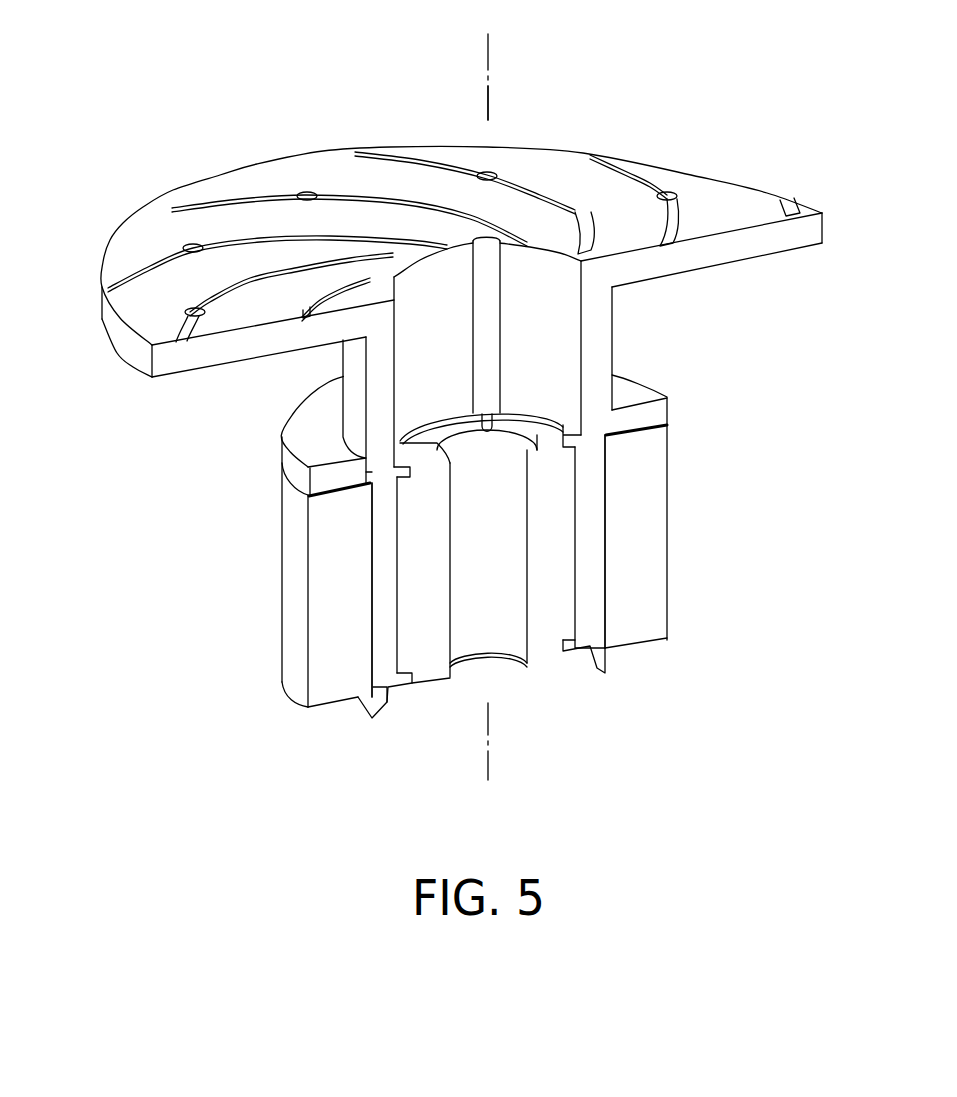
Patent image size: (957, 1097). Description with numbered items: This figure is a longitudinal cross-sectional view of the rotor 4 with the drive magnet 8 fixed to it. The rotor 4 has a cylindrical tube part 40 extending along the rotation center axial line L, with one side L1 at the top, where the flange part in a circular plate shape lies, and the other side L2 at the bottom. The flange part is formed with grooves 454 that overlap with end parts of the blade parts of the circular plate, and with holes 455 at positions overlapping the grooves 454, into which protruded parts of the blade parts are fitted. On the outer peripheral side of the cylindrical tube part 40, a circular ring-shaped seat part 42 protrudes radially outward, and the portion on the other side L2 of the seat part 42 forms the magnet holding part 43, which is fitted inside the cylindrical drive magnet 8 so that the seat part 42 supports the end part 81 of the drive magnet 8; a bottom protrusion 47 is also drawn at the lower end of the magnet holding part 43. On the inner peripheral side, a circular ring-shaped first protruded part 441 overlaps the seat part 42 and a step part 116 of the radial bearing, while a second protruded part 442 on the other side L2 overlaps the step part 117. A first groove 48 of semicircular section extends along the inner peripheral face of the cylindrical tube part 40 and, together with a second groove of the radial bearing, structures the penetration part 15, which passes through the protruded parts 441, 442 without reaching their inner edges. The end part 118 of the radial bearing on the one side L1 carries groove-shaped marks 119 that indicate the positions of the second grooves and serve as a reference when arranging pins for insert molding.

The rotor 4 is at (256, 171).
The grooves 454 is at (678, 232).
The holes 455 is at (675, 192).
The first groove 48 is at (500, 331).
The penetration part 15 is at (486, 325).
The end part 118 is at (517, 427).
The first protruded part 441 is at (400, 438).
The marks 119 is at (420, 445).
The step part 116 is at (578, 450).
The step part 117 is at (573, 632).
The second protruded part 442 is at (405, 685).
The cylindrical tube part 40 is at (605, 480).
The seat part 42 is at (328, 472).
The magnet holding part 43 is at (367, 548).
The bottom protrusion 47 is at (367, 707).
The drive magnet 8 is at (327, 660).
The end part 81 is at (320, 497).
The one side L1 is at (488, 65).
The other side L2 is at (488, 759).
The rotation center axial line L is at (498, 89).